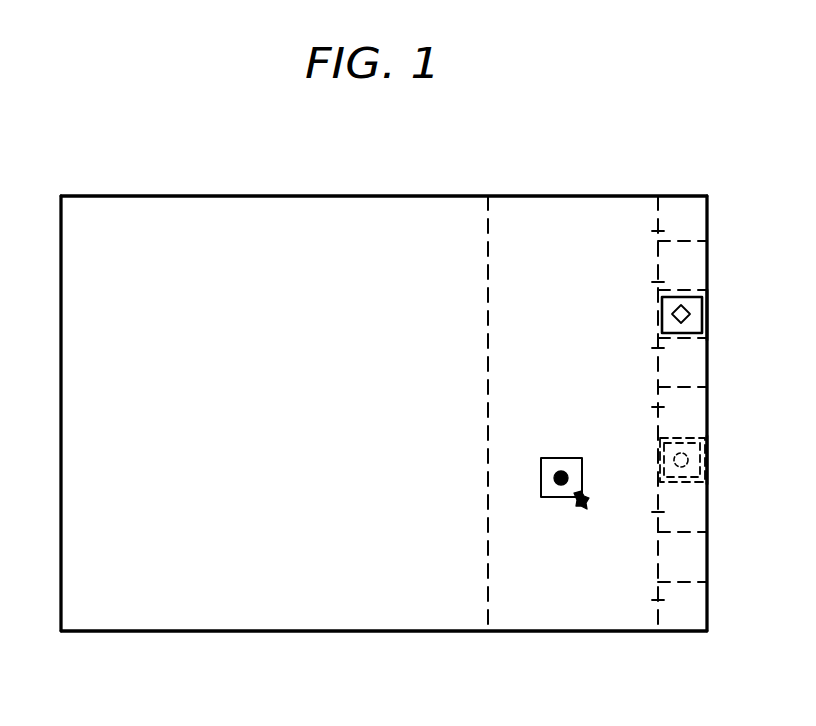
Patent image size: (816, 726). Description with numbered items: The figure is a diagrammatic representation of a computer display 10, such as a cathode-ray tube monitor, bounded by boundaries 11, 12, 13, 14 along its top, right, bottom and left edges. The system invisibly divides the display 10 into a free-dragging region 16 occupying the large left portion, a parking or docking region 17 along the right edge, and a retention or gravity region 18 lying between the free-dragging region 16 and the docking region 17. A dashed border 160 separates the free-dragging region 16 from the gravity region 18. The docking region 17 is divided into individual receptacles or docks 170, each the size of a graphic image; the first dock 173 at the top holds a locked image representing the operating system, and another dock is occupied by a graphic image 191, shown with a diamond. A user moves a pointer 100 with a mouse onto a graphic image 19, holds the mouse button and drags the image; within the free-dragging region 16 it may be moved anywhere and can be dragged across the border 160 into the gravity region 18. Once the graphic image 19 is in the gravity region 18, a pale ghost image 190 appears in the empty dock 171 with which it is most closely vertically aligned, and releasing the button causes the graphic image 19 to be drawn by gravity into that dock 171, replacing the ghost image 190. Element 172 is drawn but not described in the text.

The display 10 is at (109, 180).
The boundary 11 is at (353, 196).
The boundary 12 is at (707, 557).
The boundary 13 is at (362, 633).
The boundary 14 is at (60, 378).
The free-dragging region 16 is at (302, 349).
The docking region 17 is at (681, 186).
The gravity region 18 is at (572, 372).
The graphic image 19 is at (541, 494).
The pointer 100 is at (580, 508).
The border 160 is at (483, 590).
The docks 170 is at (658, 407).
The dock 171 is at (706, 481).
The field boundary 172 is at (707, 317).
The first dock 173 is at (708, 215).
The ghost image 190 is at (706, 445).
The graphic image 191 is at (704, 300).